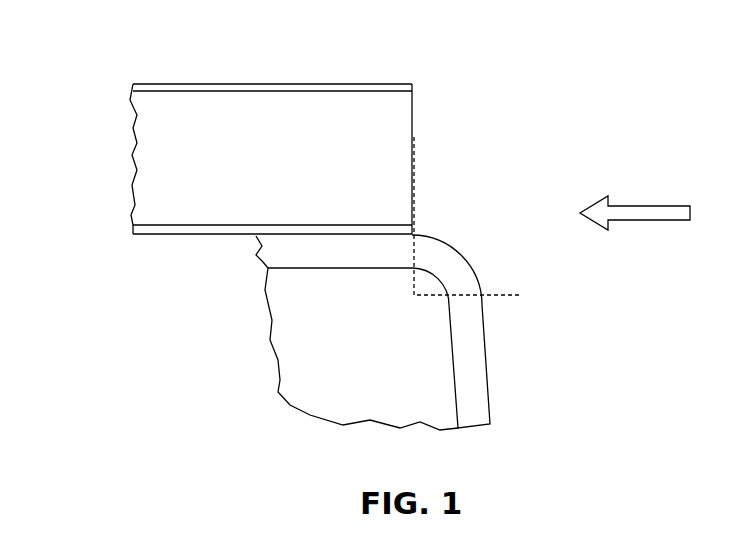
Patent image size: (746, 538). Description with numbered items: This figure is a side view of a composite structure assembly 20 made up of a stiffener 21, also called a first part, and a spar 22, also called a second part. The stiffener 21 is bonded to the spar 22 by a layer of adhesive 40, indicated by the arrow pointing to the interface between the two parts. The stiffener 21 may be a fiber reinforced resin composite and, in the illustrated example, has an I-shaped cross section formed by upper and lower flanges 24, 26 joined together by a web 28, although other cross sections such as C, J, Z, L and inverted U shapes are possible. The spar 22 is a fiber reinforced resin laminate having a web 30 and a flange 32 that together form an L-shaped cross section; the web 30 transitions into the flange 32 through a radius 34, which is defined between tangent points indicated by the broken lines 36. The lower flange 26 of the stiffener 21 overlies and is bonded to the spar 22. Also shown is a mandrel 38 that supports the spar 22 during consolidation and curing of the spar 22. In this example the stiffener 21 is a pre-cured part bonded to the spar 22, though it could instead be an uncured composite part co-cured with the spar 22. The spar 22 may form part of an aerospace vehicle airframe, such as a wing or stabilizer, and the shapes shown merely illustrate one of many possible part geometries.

The composite structure assembly 20 is at (570, 127).
The stiffener 21 is at (436, 117).
The spar 22 is at (503, 359).
The upper flange 24 is at (201, 83).
The lower flange 26 is at (164, 235).
The web 28 is at (294, 167).
The web 30 is at (317, 252).
The flange 32 is at (466, 398).
The radius 34 is at (471, 244).
The broken lines 36 is at (512, 295).
The mandrel 38 is at (322, 377).
The layer of adhesive 40 is at (273, 244).